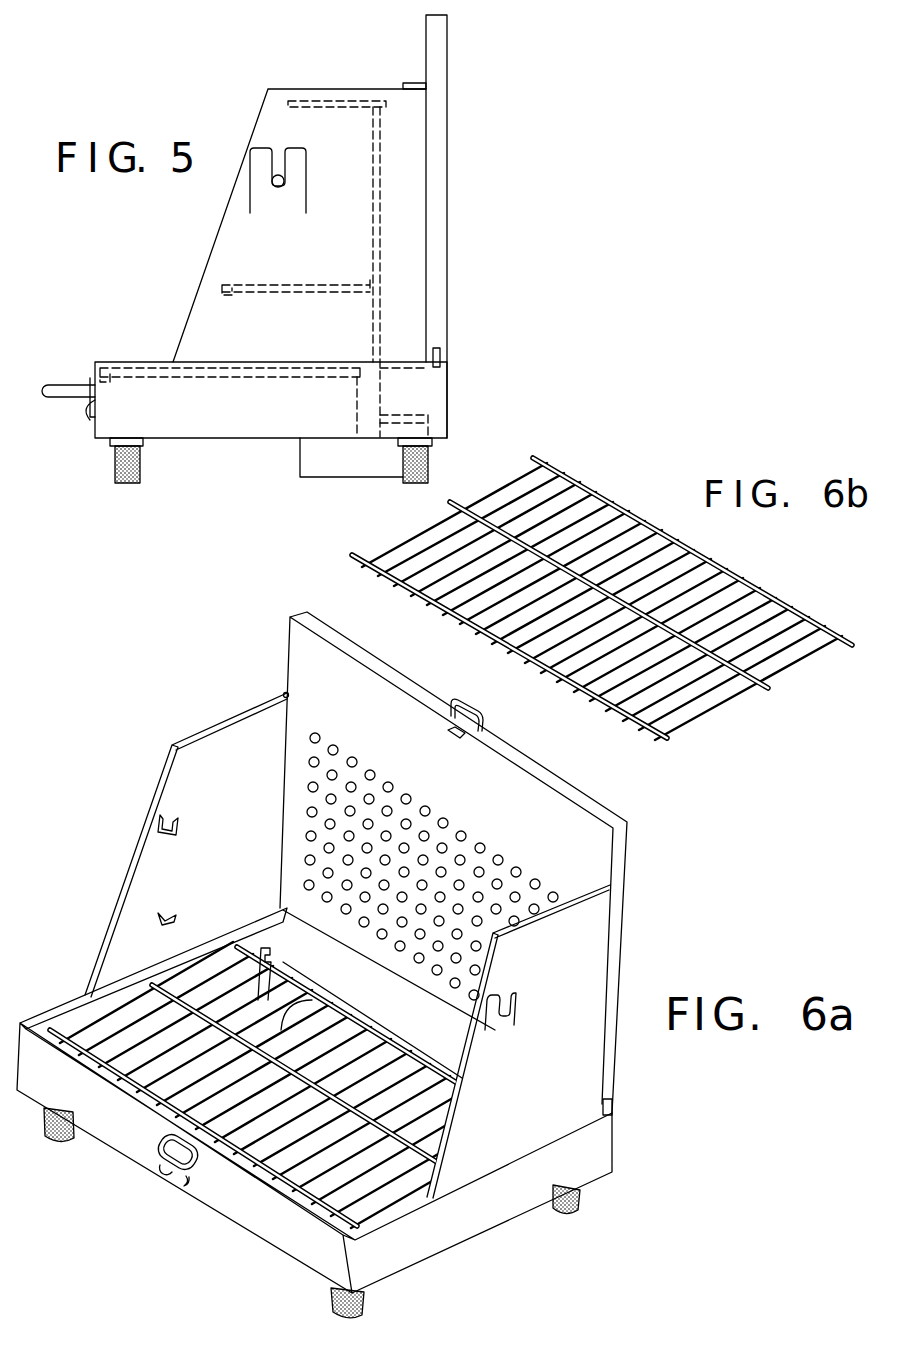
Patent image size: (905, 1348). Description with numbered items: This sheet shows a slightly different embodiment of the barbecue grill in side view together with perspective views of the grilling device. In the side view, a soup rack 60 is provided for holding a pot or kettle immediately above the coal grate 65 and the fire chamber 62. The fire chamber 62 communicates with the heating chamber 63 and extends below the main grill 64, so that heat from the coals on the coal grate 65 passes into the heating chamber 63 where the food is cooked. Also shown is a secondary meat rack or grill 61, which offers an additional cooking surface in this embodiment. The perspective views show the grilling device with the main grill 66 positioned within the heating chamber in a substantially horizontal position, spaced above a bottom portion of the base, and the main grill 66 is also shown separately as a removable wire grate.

In FIG. 5, the soup rack 60 is at (334, 100).
In FIG. 5, the secondary meat rack 61 is at (243, 283).
In FIG. 5, the fire chamber 62 is at (418, 272).
In FIG. 5, the heating chamber 63 is at (277, 417).
In FIG. 5, the main grill 64 is at (142, 370).
In FIG. 5, the coal grate 65 is at (373, 250).
In FIG. 6B, the main grill 66 is at (518, 483).